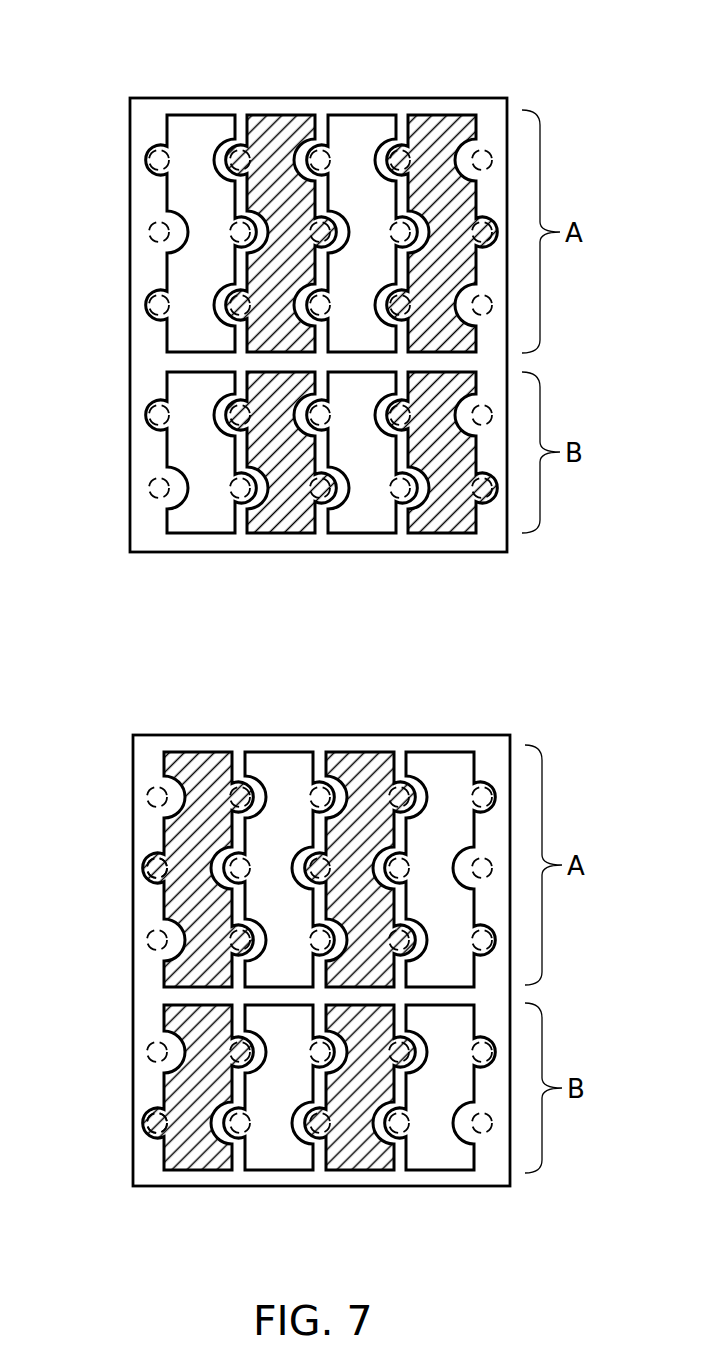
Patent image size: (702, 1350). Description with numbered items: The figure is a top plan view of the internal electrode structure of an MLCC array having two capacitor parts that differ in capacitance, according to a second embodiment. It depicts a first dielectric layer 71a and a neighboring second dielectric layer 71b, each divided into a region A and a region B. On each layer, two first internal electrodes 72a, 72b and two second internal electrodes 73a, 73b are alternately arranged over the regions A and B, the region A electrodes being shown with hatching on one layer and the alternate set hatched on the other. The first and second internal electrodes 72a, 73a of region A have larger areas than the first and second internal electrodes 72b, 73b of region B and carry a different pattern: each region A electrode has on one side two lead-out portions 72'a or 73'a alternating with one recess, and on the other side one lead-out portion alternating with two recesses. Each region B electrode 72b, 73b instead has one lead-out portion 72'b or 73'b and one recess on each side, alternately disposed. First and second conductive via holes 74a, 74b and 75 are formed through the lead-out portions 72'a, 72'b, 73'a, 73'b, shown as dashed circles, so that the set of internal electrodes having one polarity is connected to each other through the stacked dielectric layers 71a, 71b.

The first dielectric layer 71a is at (500, 102).
The second dielectric layer 71b is at (508, 1172).
The first internal electrode 72a is at (455, 120).
The lead-out portion 72'a is at (238, 455).
The first internal electrode 72b is at (447, 532).
The lead-out portion 72'b is at (283, 838).
The second internal electrode 73a is at (347, 115).
The lead-out portion 73'a is at (329, 417).
The second internal electrode 73b is at (357, 532).
The lead-out portion 73'b is at (311, 878).
The first conductive via hole 74a is at (150, 235).
The first conductive via hole 74b is at (150, 488).
The second conductive via hole 75 is at (152, 157).